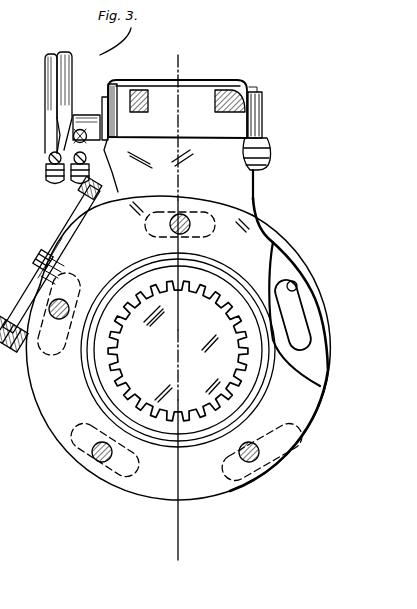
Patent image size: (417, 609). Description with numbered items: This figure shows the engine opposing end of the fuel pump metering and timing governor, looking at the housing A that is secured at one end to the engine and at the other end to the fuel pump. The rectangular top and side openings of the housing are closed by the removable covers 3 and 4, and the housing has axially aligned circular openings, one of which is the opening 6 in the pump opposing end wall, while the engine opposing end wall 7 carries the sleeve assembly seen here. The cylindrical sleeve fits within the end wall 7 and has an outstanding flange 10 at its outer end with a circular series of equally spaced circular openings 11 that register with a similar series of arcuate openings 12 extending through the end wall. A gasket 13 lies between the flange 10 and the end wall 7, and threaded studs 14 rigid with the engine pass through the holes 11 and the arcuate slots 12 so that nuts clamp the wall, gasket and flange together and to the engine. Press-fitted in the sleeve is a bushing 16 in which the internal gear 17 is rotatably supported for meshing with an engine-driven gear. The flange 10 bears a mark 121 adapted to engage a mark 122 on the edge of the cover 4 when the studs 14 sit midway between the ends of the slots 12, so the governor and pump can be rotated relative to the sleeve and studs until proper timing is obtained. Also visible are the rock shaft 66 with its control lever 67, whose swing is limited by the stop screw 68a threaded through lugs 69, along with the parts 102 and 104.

The removable cover 3 is at (205, 83).
The removable cover 4 is at (75, 221).
The circular opening 6 is at (158, 62).
The engine opposing end wall 7 is at (283, 256).
The outstanding flange 10 is at (253, 242).
The circular openings 11 is at (210, 222).
The arcuate openings 12 is at (262, 217).
The gasket 13 is at (2, 409).
The threaded studs 14 is at (183, 214).
The bushing 16 is at (222, 280).
The internal gear 17 is at (242, 378).
The rock shaft 66 is at (45, 158).
The control lever 67 is at (70, 80).
The stop screw 68a is at (82, 142).
The lugs 69 is at (95, 115).
The link 102 is at (205, 10).
The bracket arm 104 is at (50, 55).
The mark 121 is at (62, 266).
The mark 122 is at (36, 264).
The housing A is at (258, 197).